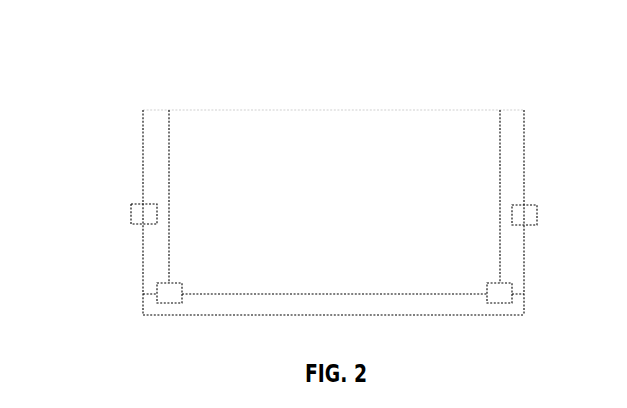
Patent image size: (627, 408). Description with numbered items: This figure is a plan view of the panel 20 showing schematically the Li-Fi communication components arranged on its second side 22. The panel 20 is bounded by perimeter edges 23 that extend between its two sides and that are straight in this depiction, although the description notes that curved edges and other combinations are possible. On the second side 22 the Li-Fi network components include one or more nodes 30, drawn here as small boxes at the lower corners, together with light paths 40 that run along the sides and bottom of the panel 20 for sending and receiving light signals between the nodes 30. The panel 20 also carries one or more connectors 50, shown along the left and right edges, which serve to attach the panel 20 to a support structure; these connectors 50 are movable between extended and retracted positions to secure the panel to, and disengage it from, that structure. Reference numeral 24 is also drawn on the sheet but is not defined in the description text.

The panel 20 is at (116, 92).
The second side 22 is at (287, 125).
The perimeter edges 23 is at (452, 315).
The side edge 24 is at (445, 125).
The nodes 30 is at (168, 297).
The light paths 40 is at (169, 137).
The connectors 50 is at (138, 213).